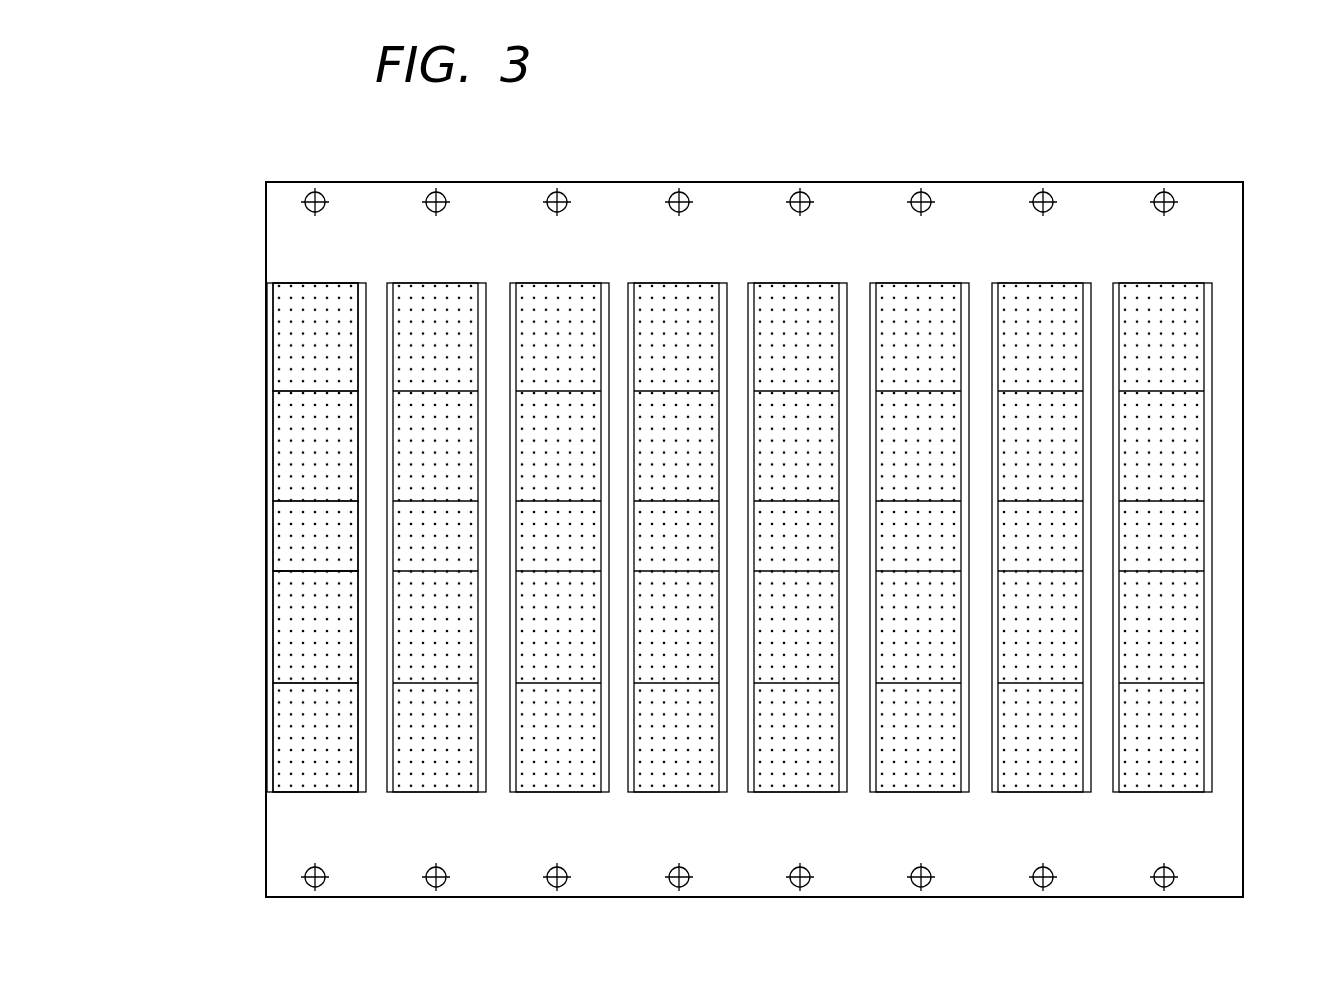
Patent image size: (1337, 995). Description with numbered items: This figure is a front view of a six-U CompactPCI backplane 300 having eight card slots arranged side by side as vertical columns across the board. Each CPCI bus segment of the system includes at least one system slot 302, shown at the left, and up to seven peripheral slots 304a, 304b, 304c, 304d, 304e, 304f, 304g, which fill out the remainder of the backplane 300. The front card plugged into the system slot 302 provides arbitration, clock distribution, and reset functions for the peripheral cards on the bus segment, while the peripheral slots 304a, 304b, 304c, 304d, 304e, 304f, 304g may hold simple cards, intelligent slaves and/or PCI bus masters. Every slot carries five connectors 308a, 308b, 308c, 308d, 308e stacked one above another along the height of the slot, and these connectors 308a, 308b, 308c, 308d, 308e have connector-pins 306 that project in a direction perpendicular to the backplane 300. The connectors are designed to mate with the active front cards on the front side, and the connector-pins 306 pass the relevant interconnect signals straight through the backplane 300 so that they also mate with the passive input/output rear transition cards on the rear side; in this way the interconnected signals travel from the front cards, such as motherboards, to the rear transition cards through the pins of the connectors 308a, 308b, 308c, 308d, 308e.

The backplane 300 is at (1244, 224).
The system slot 302 is at (315, 283).
The peripheral slot 304a is at (410, 792).
The peripheral slot 304b is at (533, 792).
The peripheral slot 304c is at (651, 792).
The peripheral slot 304d is at (771, 792).
The peripheral slot 304e is at (893, 792).
The peripheral slot 304f is at (1015, 792).
The peripheral slot 304g is at (1136, 792).
The connector-pins 306 is at (288, 571).
The connector 308a is at (266, 738).
The connector 308b is at (266, 655).
The connector 308c is at (266, 538).
The connector 308d is at (266, 417).
The connector 308e is at (266, 332).